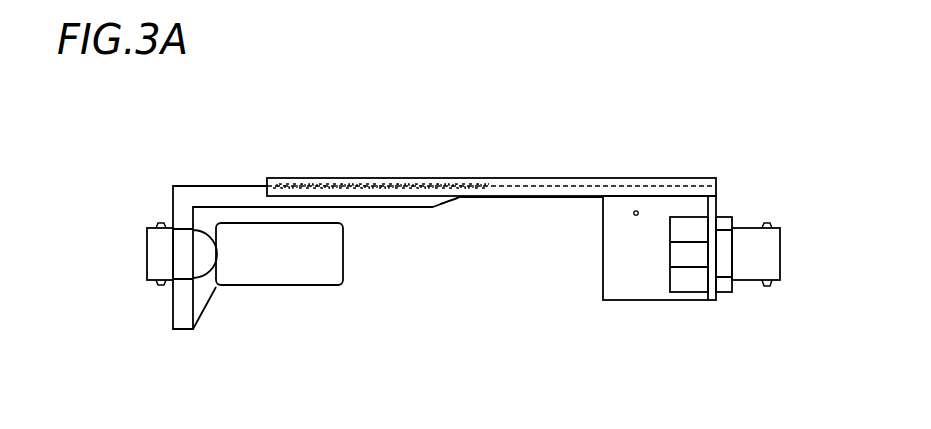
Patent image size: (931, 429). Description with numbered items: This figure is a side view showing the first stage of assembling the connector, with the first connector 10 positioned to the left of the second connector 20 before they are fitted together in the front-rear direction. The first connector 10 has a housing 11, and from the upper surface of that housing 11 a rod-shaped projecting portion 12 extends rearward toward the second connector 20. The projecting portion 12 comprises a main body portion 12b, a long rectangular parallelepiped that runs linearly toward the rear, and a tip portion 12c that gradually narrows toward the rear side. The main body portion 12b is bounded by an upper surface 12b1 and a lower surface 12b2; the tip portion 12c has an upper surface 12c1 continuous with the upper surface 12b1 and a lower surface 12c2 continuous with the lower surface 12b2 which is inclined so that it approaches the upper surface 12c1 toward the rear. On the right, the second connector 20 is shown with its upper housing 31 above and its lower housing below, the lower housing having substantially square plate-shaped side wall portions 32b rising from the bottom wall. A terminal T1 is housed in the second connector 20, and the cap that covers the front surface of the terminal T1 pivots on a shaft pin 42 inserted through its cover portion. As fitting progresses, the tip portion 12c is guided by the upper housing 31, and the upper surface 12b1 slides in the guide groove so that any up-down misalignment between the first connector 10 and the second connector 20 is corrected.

The first connector 10 is at (225, 330).
The housing 11 is at (283, 270).
The projecting portion 12 is at (397, 208).
The main body portion 12b is at (341, 199).
The upper surface of main body portion 12b1 is at (375, 177).
The lower surface of main body portion 12b2 is at (362, 207).
The tip portion 12c is at (434, 200).
The upper surface of tip portion 12c1 is at (460, 177).
The lower surface of tip portion 12c2 is at (455, 201).
The second connector 20 is at (659, 165).
The upper housing 31 is at (693, 176).
The side wall portion 32b is at (642, 287).
The shaft pin 42 is at (636, 211).
The terminal T1 is at (758, 253).